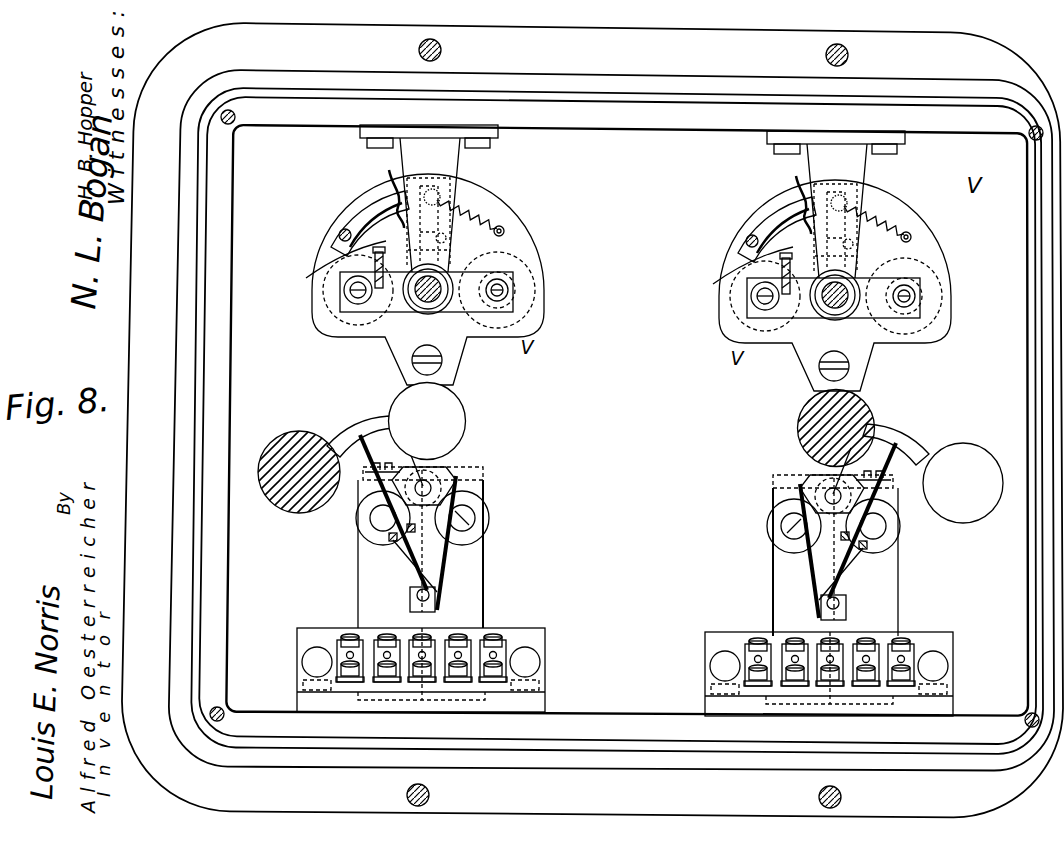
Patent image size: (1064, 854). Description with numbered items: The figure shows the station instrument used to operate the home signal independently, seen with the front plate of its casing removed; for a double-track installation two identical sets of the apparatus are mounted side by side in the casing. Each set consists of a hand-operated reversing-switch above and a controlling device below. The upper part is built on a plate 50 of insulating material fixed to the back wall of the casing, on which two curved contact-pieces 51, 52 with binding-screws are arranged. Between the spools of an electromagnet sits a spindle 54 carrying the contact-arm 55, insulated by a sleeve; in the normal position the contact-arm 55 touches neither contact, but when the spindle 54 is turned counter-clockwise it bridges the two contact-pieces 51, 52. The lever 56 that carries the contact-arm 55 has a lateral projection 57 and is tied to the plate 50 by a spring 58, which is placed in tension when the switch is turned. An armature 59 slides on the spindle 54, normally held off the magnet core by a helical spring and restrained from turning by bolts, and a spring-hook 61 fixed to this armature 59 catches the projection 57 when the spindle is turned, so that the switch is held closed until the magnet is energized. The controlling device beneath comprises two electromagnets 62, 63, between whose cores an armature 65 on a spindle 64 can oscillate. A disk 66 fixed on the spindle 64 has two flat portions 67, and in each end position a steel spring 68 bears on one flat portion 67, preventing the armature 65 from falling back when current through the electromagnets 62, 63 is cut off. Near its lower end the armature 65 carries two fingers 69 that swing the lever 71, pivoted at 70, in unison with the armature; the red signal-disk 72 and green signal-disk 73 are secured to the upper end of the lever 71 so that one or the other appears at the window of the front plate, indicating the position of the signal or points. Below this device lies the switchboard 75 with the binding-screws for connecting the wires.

The plate 50 is at (545, 252).
The curved contact-piece 51 is at (350, 249).
The curved contact-piece 52 is at (356, 217).
The spindle 54 is at (432, 300).
The contact-arm 55 is at (463, 183).
The lever 56 is at (450, 246).
The lateral projection 57 is at (395, 180).
The spring 58 is at (470, 222).
The armature 59 is at (378, 305).
The spring-hook 61 is at (374, 268).
The electromagnet 62 is at (357, 520).
The electromagnet 63 is at (490, 540).
The spindle 64 is at (444, 485).
The armature 65 is at (628, 526).
The disk 66 is at (457, 497).
The flat portion 67 is at (407, 452).
The steel spring 68 is at (783, 477).
The finger 69 is at (390, 547).
The pivot 70 is at (413, 597).
The lever 71 is at (628, 457).
The signal-disk 72 is at (292, 503).
The signal-disk 73 is at (466, 433).
The switchboard 75 is at (545, 638).